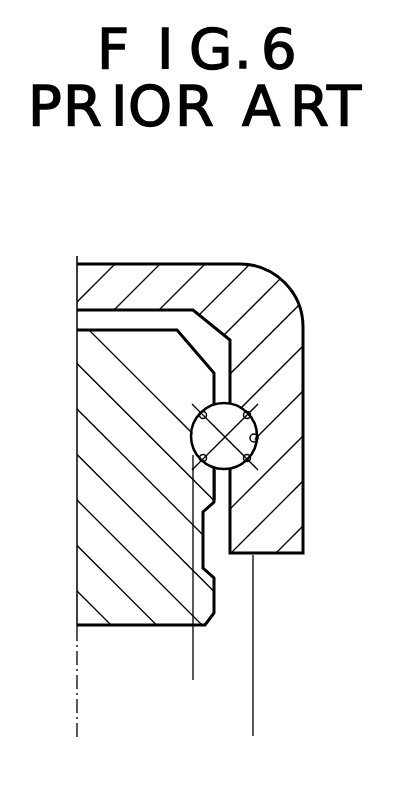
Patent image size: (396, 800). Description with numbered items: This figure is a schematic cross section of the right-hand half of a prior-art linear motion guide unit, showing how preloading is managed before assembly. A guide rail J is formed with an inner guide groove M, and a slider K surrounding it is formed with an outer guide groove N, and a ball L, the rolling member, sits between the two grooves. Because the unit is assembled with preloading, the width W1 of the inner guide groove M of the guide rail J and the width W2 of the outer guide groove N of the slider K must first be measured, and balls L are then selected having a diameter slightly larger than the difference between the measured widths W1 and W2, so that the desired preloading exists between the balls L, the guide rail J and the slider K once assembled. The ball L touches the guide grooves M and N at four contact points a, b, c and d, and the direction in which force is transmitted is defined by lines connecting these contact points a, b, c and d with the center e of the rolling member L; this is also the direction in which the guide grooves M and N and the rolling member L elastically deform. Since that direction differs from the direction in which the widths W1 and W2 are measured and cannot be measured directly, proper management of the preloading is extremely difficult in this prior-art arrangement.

The slider K is at (295, 289).
The guide rail J is at (202, 603).
The ball L is at (244, 472).
The inner guide groove M is at (238, 420).
The outer guide groove N is at (259, 440).
The contact point a is at (200, 415).
The contact point b is at (203, 462).
The contact point c is at (250, 460).
The contact point d is at (248, 412).
The center of the rolling member e is at (221, 468).
The width of inner guide groove W1 is at (192, 665).
The width of outer guide groove W2 is at (252, 723).